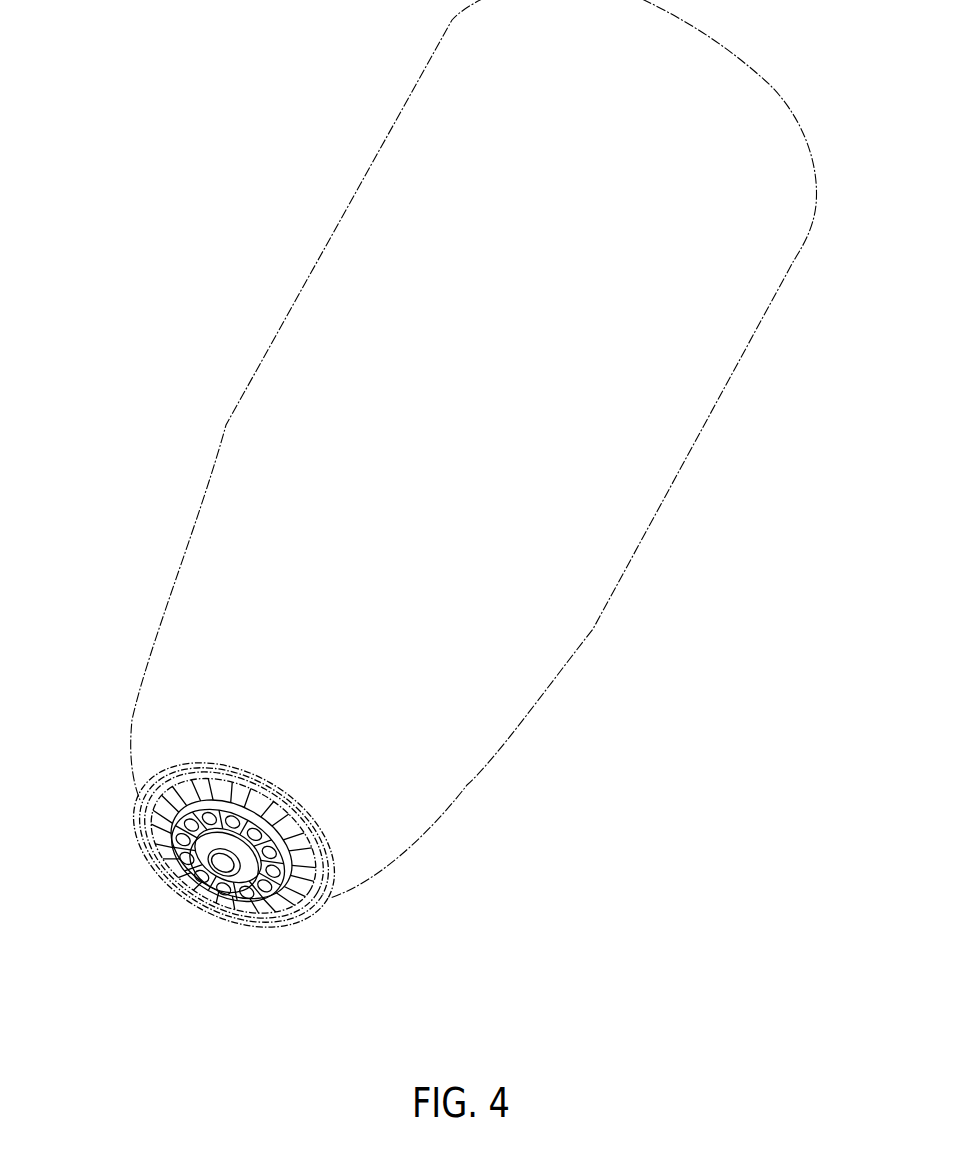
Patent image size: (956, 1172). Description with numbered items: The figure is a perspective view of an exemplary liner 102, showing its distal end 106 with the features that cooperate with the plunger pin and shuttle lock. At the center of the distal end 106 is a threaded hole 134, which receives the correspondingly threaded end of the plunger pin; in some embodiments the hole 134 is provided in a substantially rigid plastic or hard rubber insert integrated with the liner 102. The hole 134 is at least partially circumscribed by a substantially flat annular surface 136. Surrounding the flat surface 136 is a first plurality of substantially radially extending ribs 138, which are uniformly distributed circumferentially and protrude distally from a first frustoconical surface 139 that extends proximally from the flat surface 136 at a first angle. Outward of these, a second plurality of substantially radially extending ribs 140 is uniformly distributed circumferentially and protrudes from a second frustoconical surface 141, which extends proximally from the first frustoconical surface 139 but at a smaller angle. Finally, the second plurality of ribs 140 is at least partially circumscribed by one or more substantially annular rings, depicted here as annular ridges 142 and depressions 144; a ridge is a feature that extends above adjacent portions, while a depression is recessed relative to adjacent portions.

The liner 102 is at (222, 532).
The distal end 106 is at (235, 919).
The threaded hole 134 is at (223, 862).
The substantially flat annular surface 136 is at (200, 858).
The first plurality of substantially radially extending ribs 138 is at (268, 866).
The first frustoconical surface 139 is at (257, 839).
The second plurality of substantially radially extending ribs 140 is at (298, 865).
The second frustoconical surface 141 is at (178, 797).
The substantially annular ridges 142 is at (150, 822).
The depressions 144 is at (143, 802).